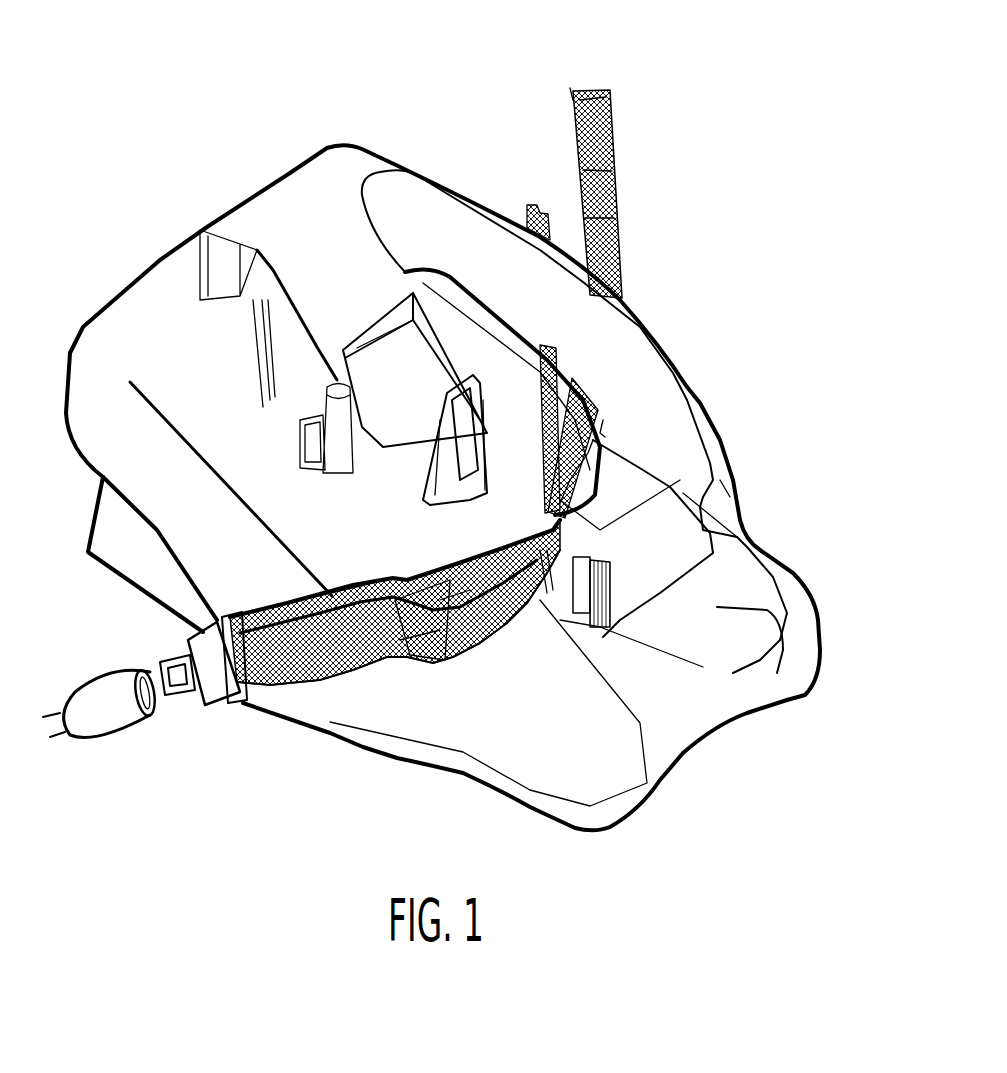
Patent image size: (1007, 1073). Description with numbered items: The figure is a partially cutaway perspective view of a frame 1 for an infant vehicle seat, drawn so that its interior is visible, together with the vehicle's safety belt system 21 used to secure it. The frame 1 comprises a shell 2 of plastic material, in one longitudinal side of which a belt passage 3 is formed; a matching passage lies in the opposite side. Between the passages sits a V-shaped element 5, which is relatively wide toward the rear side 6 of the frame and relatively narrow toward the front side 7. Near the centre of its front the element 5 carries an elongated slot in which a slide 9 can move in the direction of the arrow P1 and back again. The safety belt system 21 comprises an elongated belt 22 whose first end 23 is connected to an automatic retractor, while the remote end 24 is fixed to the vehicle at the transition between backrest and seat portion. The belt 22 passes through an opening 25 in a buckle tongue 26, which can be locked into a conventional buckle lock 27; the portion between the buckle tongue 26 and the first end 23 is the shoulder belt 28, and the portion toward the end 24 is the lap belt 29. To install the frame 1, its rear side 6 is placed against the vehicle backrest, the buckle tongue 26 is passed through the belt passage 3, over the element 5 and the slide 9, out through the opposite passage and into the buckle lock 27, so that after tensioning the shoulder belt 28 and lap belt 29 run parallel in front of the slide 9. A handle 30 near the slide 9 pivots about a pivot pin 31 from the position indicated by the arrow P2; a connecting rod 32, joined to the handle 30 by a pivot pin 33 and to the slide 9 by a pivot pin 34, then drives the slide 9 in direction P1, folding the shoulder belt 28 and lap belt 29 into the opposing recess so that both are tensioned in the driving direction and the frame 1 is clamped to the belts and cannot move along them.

The frame 1 is at (387, 150).
The shell 2 is at (320, 192).
The belt passage 3 is at (505, 310).
The V-shaped element 5 is at (410, 300).
The rear side 6 is at (160, 262).
The front side 7 is at (808, 667).
The slide 9 is at (483, 600).
The safety belt system 21 is at (620, 137).
The belt 22 is at (613, 218).
The first end 23 is at (613, 97).
The end 24 is at (540, 210).
The opening 25 is at (243, 700).
The buckle tongue 26 is at (212, 680).
The buckle lock 27 is at (123, 712).
The shoulder belt 28 is at (613, 173).
The lap belt 29 is at (577, 380).
The handle 30 is at (460, 427).
The pivot pin 31 is at (427, 503).
The connecting rod 32 is at (425, 660).
The pivot pin 33 is at (460, 533).
The pivot pin 34 is at (453, 617).
The arrow P1 is at (394, 544).
The arrow P2 is at (503, 464).